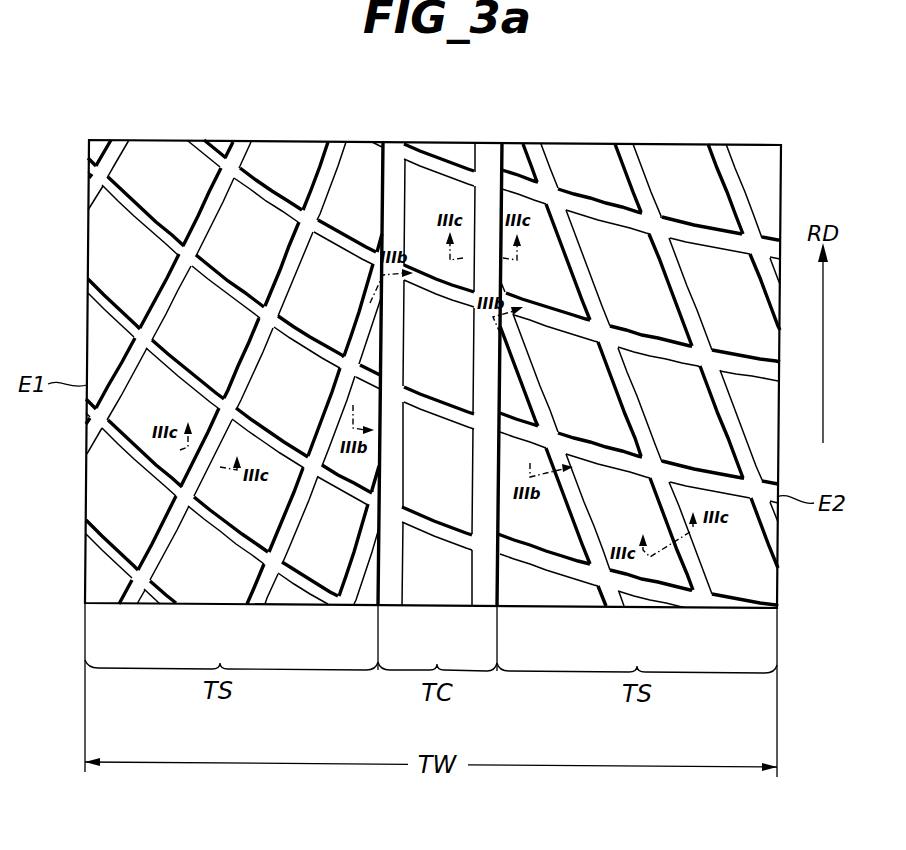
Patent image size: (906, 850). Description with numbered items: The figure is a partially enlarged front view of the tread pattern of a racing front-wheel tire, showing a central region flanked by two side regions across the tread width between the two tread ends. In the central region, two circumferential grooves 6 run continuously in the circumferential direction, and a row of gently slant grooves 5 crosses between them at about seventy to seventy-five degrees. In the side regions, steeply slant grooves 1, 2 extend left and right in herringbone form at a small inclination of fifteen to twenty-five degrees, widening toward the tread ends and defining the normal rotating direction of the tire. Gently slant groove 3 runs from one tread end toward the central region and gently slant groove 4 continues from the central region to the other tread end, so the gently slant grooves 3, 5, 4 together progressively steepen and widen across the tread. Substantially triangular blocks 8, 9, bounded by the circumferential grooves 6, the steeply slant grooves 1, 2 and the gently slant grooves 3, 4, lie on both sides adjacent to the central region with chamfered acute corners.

The steeply slant groove 1 is at (340, 172).
The steeply slant groove 2 is at (550, 173).
The gently slant groove 3 is at (268, 185).
The gently slant groove 4 is at (618, 337).
The gently slant groove 5 is at (433, 160).
The circumferential groove 6 is at (392, 158).
The block 8 is at (357, 170).
The block 9 is at (512, 160).